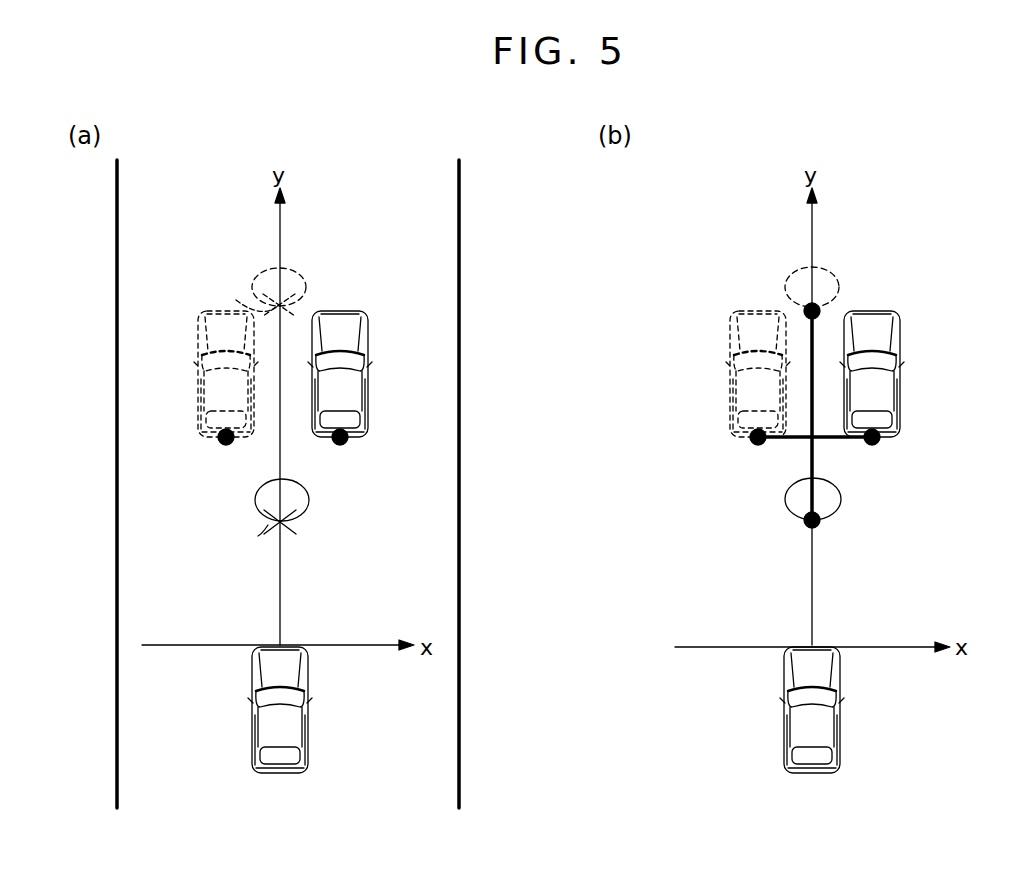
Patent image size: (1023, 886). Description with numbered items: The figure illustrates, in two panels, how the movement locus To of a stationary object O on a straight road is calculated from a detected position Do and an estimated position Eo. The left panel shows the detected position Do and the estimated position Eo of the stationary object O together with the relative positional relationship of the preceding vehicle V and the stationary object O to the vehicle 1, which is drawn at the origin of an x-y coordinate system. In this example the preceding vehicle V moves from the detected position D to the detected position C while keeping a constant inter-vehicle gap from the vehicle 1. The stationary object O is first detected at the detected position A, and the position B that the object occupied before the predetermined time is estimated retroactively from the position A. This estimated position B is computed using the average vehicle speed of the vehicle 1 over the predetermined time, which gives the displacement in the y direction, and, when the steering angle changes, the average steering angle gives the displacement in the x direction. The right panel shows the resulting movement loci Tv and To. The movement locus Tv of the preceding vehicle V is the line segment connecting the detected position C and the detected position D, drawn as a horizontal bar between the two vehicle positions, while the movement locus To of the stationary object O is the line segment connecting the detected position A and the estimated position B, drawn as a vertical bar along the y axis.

The vehicle 1 is at (308, 722).
The preceding vehicle V is at (367, 339).
The detected position D is at (752, 447).
The detected position C is at (904, 462).
The estimated position B is at (279, 305).
The detected position A is at (291, 533).
The stationary object O is at (258, 493).
The estimated position Eo is at (268, 308).
The detected position Do is at (268, 526).
The movement locus To is at (808, 335).
The movement locus Tv is at (792, 436).